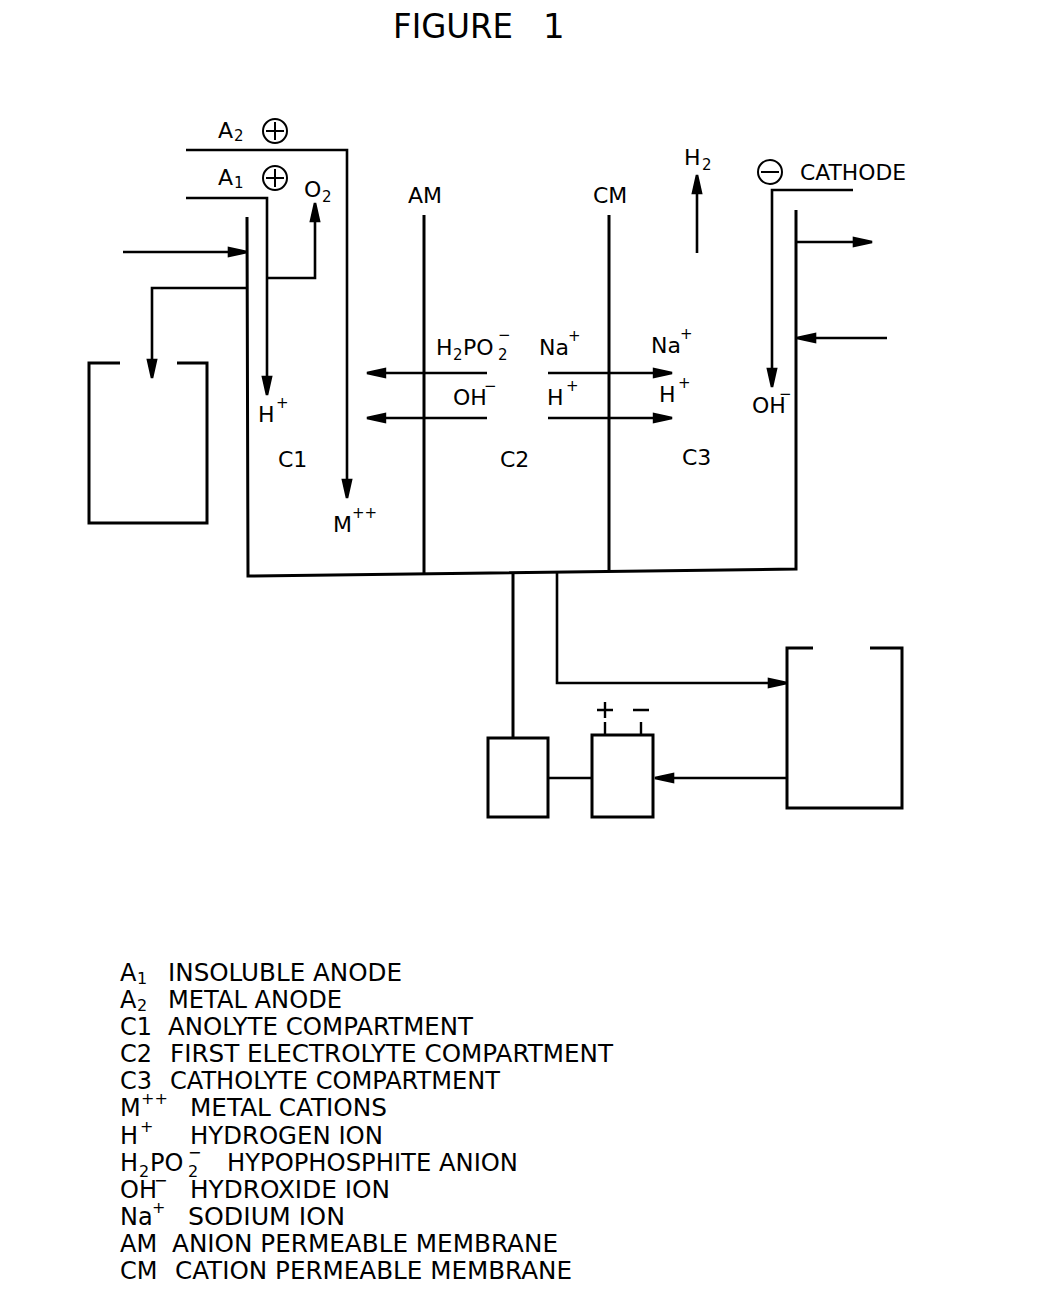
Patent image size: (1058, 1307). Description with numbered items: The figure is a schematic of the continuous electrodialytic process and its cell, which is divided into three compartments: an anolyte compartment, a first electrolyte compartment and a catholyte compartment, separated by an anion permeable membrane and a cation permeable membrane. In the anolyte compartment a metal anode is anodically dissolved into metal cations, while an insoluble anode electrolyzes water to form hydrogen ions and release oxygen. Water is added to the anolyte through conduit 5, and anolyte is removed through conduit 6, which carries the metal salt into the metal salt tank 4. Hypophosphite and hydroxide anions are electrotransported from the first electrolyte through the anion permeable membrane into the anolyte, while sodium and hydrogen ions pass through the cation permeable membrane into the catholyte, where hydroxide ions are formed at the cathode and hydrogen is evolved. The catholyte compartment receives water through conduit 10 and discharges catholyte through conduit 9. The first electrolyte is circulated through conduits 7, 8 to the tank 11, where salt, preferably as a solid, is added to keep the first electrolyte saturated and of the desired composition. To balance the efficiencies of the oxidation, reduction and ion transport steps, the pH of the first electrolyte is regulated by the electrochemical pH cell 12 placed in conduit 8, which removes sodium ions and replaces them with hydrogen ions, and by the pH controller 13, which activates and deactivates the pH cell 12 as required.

The metal salt tank 4 is at (148, 474).
The water conduit 5 is at (185, 227).
The anolyte removal conduit 6 is at (197, 333).
The first electrolyte circulation conduit 7 is at (672, 630).
The first electrolyte return conduit 8 is at (721, 762).
The catholyte removal conduit 9 is at (860, 245).
The water addition conduit 10 is at (844, 342).
The first electrolyte salt tank 11 is at (842, 720).
The pH control cell 12 is at (629, 777).
The pH controller 13 is at (462, 695).